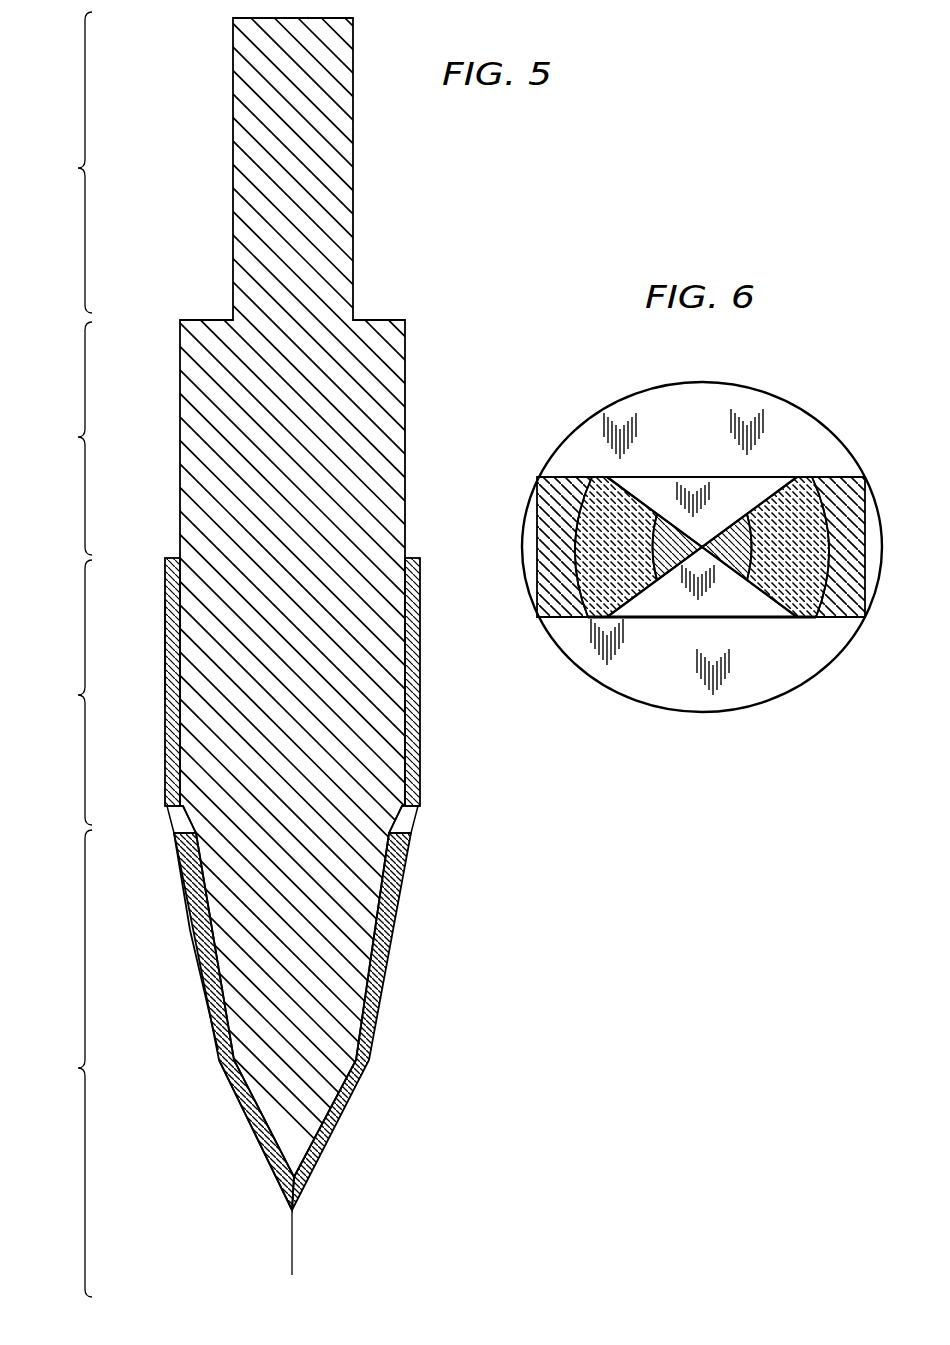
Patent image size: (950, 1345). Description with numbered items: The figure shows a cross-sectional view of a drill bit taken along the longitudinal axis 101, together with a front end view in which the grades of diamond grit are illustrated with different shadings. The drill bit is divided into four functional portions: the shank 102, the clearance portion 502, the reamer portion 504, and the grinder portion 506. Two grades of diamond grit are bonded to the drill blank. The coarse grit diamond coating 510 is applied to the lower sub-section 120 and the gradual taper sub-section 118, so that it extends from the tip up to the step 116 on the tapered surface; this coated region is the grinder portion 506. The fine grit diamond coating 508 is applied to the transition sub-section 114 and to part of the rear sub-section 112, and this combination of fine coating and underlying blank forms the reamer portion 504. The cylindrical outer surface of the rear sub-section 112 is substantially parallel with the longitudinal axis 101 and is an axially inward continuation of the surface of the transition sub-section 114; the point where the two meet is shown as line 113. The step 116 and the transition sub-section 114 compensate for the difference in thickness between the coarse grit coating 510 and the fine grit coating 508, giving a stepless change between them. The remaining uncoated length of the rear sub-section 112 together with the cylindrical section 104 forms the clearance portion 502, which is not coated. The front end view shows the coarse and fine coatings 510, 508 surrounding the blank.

In FIG. 5, the longitudinal axis 101 is at (292, 1240).
In FIG. 5, the shank 102 is at (64, 162).
In FIG. 5, the cylindrical section 104 is at (405, 415).
In FIG. 5, the rear sub-section 112 is at (168, 652).
In FIG. 5, the line 113 is at (413, 802).
In FIG. 5, the transition sub-section 114 is at (168, 806).
In FIG. 5, the step 116 is at (177, 847).
In FIG. 5, the gradual taper sub-section 118 is at (217, 975).
In FIG. 5, the lower sub-section 120 is at (240, 1103).
In FIG. 5, the clearance portion 502 is at (64, 438).
In FIG. 5, the reamer portion 504 is at (64, 692).
In FIG. 5, the grinder portion 506 is at (64, 1063).
In FIG. 5, the fine grit diamond coating 508 is at (410, 687).
In FIG. 6, the fine grit diamond coating 508 is at (523, 545).
In FIG. 5, the coarse grit diamond coating 510 is at (380, 958).
In FIG. 6, the coarse grit diamond coating 510 is at (805, 485).